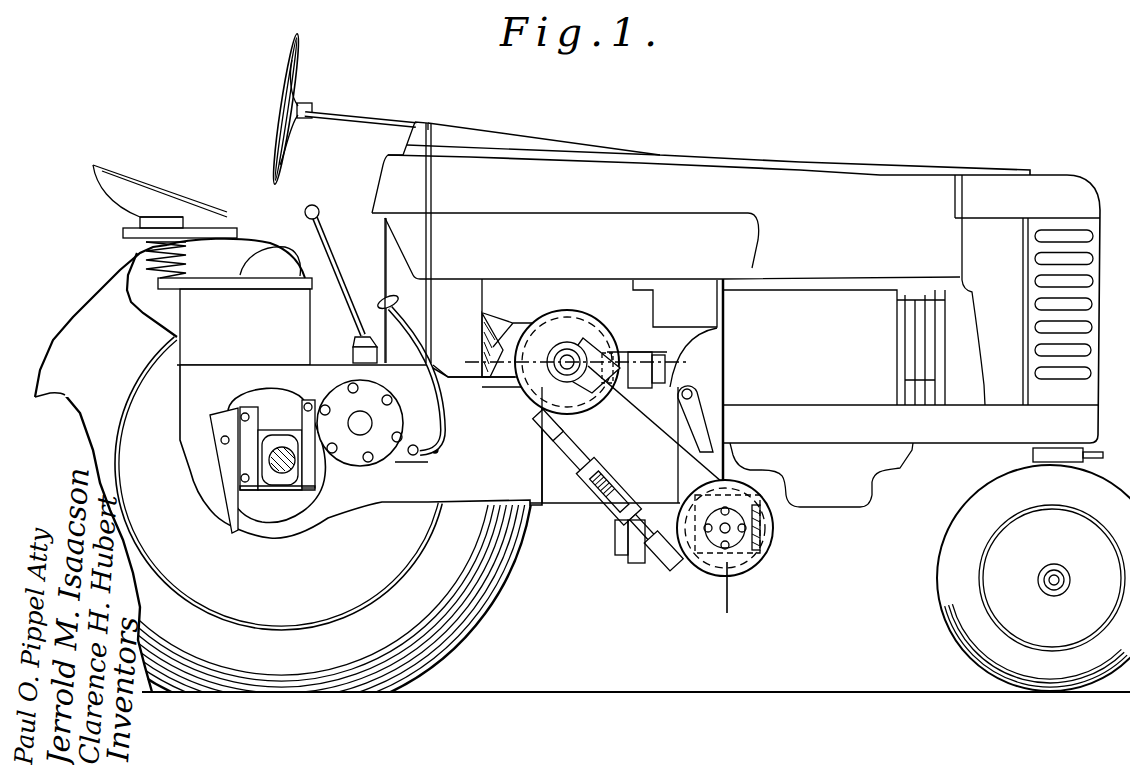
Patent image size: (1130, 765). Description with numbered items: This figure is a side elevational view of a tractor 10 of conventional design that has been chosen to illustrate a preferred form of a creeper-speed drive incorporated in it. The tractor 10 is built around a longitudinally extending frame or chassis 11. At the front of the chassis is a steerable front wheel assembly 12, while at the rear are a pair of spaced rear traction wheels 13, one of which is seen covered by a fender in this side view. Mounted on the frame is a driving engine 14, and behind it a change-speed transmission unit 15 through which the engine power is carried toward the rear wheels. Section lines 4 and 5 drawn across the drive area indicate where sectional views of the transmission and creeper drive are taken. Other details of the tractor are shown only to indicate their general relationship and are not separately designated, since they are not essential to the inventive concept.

The tractor 10 is at (952, 153).
The frame or chassis 11 is at (951, 437).
The steerable front wheel assembly 12 is at (956, 548).
The rear traction wheels 13 is at (82, 332).
The driving engine 14 is at (812, 308).
The change-speed transmission unit 15 is at (558, 487).
The section line 4- 4 is at (710, 423).
The section line 5- 5 is at (475, 372).